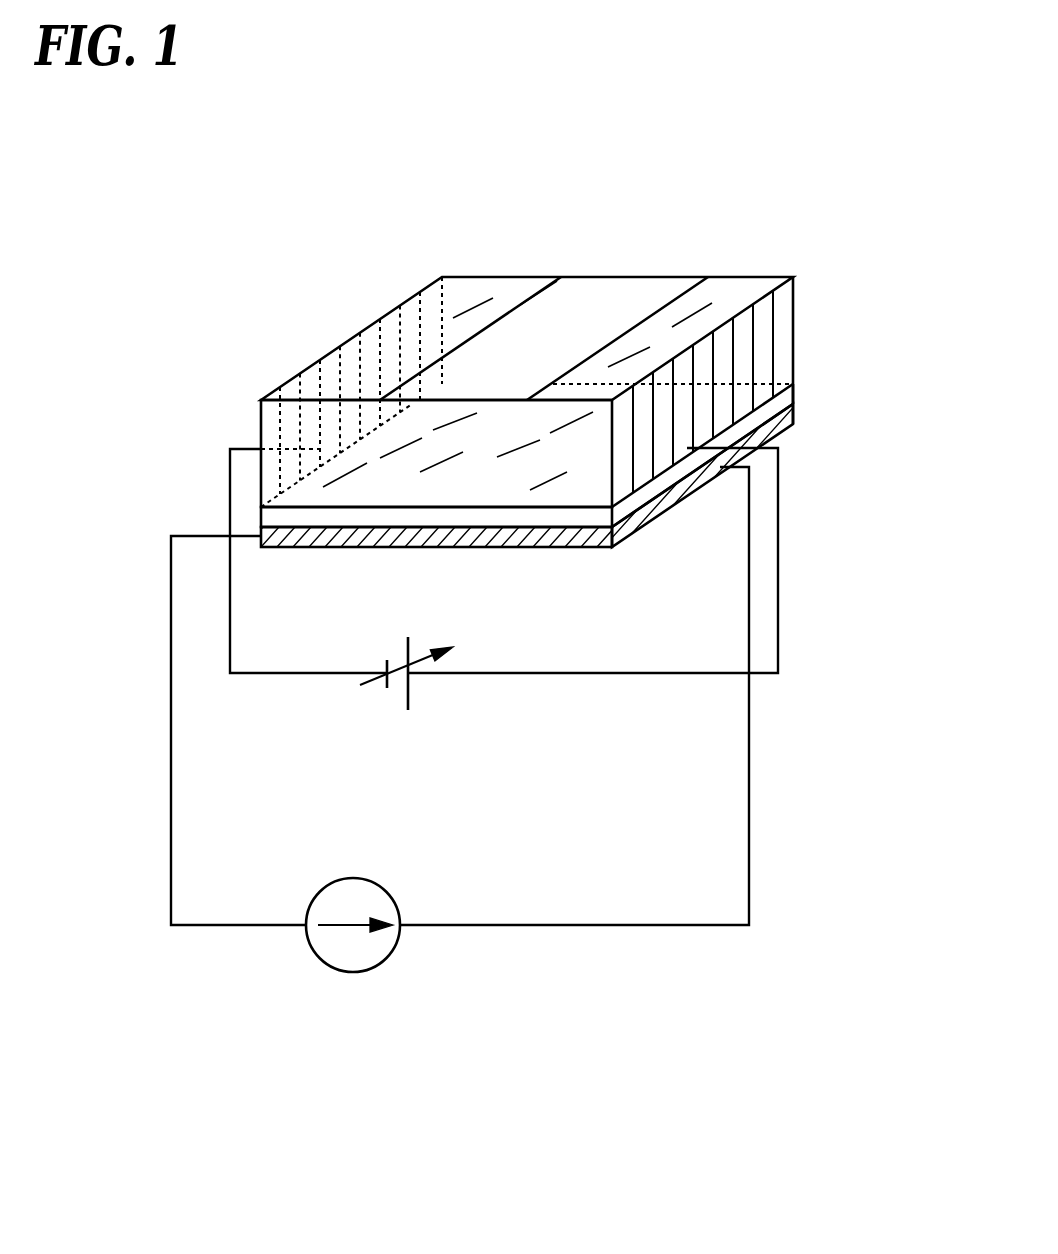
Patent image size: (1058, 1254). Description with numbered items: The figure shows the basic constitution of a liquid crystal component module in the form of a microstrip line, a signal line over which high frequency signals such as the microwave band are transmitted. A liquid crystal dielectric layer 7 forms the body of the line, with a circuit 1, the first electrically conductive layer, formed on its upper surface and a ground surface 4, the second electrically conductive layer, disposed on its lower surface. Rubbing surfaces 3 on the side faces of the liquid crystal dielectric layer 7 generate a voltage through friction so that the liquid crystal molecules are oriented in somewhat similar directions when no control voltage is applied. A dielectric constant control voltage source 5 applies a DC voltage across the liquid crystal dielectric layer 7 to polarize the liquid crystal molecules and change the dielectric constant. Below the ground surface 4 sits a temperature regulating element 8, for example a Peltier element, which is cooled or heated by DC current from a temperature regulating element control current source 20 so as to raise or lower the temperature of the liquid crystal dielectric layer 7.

The circuit 1 is at (598, 287).
The liquid crystal dielectric layer 7 is at (737, 295).
The rubbing surface 3 is at (740, 402).
The ground surface 4 is at (657, 485).
The temperature regulating element 8 is at (647, 517).
The dielectric constant control voltage source 5 is at (392, 702).
The temperature regulating element control current source 20 is at (353, 972).